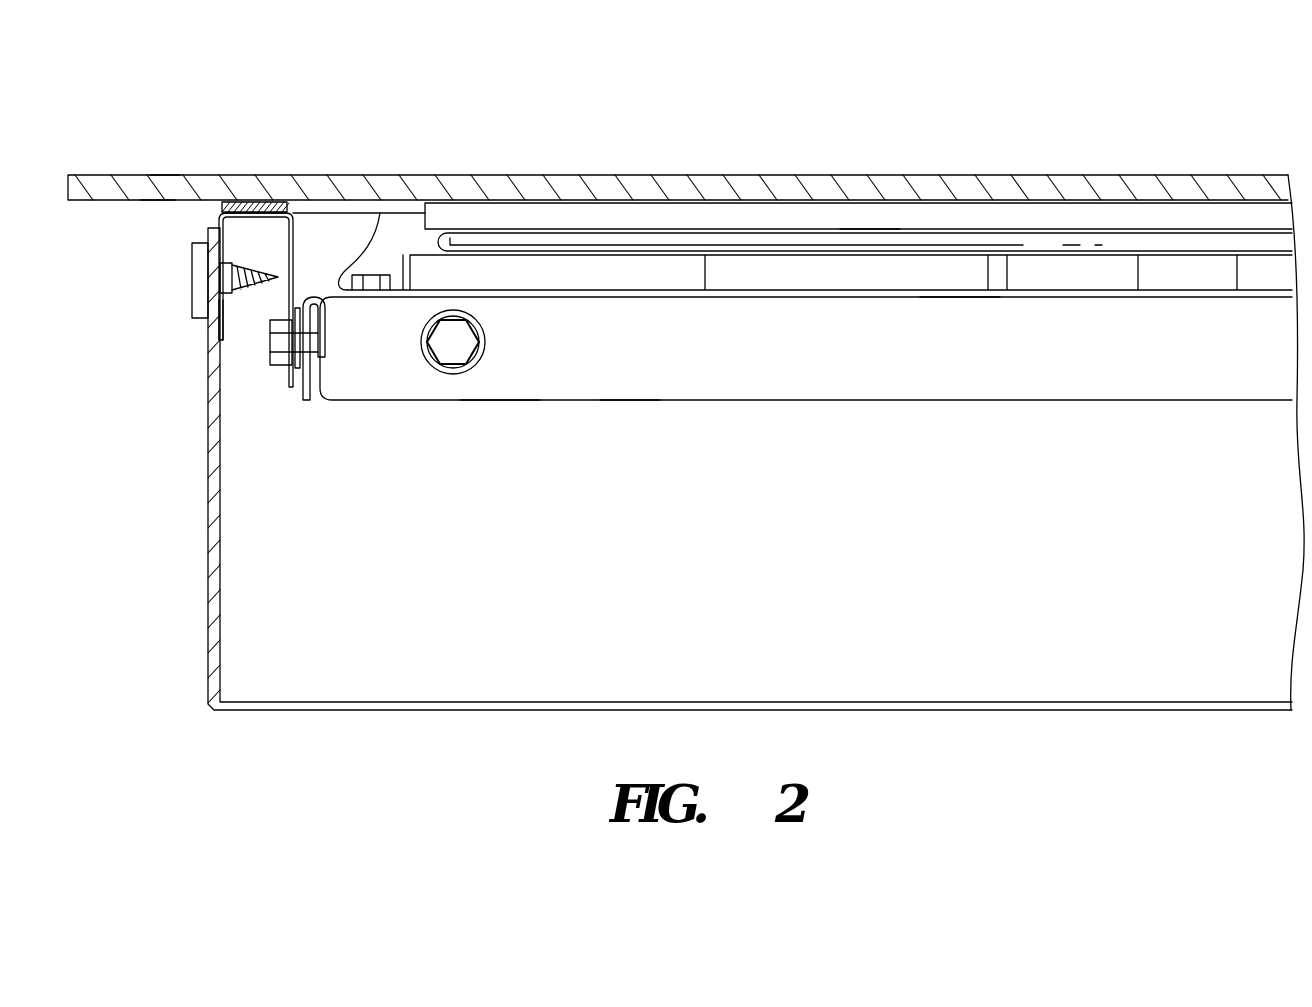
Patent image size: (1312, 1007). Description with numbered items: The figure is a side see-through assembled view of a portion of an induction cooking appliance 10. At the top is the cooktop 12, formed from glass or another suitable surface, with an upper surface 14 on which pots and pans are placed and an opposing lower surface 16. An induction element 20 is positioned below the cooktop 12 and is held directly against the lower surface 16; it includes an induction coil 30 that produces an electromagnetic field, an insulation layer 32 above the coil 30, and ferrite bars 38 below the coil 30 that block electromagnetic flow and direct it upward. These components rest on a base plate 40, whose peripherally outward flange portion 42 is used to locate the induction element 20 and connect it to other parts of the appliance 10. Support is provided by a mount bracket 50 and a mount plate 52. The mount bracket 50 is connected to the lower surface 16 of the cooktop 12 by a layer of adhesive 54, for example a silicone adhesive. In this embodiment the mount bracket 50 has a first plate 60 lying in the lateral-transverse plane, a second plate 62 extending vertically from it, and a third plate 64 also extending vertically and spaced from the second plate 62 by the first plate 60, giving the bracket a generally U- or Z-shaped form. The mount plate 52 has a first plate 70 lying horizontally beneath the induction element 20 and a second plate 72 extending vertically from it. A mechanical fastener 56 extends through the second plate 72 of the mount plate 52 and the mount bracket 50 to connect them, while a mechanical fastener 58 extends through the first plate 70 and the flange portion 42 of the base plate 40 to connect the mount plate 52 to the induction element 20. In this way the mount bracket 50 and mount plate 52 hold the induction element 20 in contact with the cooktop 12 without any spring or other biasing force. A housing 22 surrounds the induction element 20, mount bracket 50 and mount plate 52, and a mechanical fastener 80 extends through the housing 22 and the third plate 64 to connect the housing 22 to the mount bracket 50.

The induction cooking appliance 10 is at (1165, 122).
The cooktop 12 is at (120, 172).
The upper surface 14 is at (165, 173).
The lower surface 16 is at (157, 203).
The induction element 20 is at (788, 300).
The housing 22 is at (207, 547).
The induction coil 30 is at (755, 243).
The insulation layer 32 is at (878, 222).
The ferrite bars 38 is at (657, 270).
The base plate 40 is at (551, 281).
The flange portion 42 is at (377, 210).
The mount bracket 50 is at (236, 231).
The mount plate 52 is at (491, 403).
The adhesive 54 is at (288, 202).
The mechanical fastener 56 is at (273, 367).
The mechanical fastener 58 is at (372, 267).
The first plate 60 is at (248, 205).
The second plate 62 is at (297, 238).
The third plate 64 is at (220, 322).
The first plate 70 is at (967, 297).
The second plate 72 is at (307, 403).
The mechanical fastener 80 is at (190, 280).